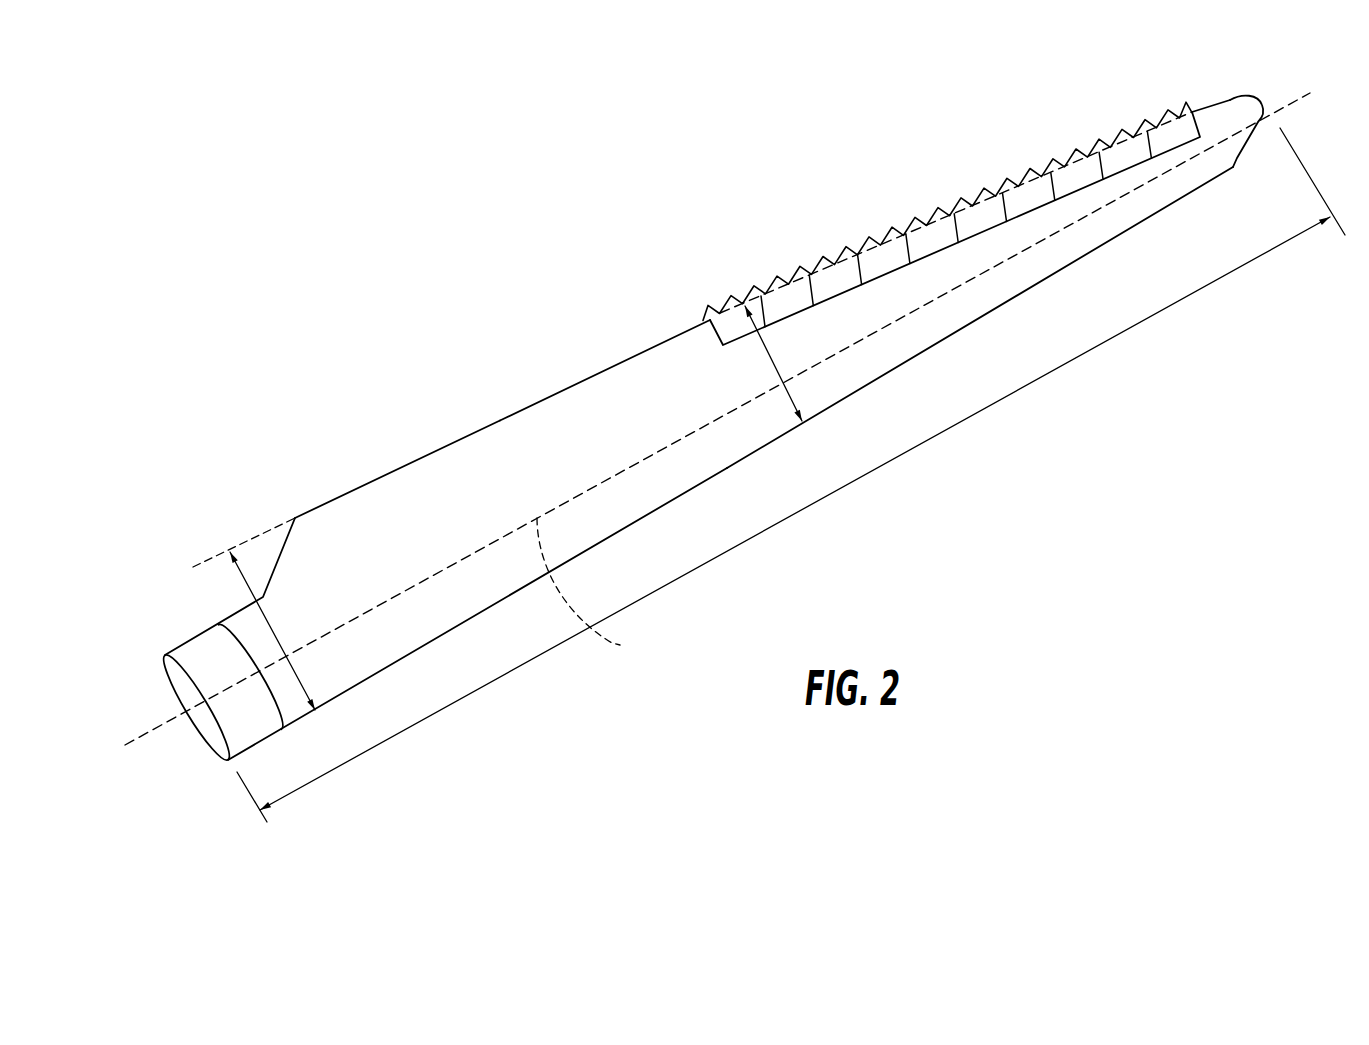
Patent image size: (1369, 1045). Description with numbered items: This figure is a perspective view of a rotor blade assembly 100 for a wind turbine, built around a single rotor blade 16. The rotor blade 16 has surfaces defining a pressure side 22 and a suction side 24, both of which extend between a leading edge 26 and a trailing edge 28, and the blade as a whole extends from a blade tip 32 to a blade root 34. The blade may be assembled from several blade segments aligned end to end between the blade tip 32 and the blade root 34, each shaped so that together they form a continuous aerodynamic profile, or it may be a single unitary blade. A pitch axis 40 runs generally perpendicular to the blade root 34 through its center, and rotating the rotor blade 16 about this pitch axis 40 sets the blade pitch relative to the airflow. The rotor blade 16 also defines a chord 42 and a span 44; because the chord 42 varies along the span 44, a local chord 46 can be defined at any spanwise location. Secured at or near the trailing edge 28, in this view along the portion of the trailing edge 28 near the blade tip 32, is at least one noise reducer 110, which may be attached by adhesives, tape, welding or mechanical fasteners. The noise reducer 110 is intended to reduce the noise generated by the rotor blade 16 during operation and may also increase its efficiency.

The rotor blade assembly 100 is at (514, 268).
The rotor blade 16 is at (484, 406).
The pressure side 22 is at (403, 482).
The suction side 24 is at (727, 468).
The leading edge 26 is at (425, 647).
The trailing edge 28 is at (320, 505).
The blade tip 32 is at (1234, 99).
The blade root 34 is at (234, 721).
The pitch axis 40 is at (592, 591).
The chord 42 is at (255, 612).
The span 44 is at (823, 500).
The local chord 46 is at (768, 352).
The noise reducer 110 is at (916, 193).